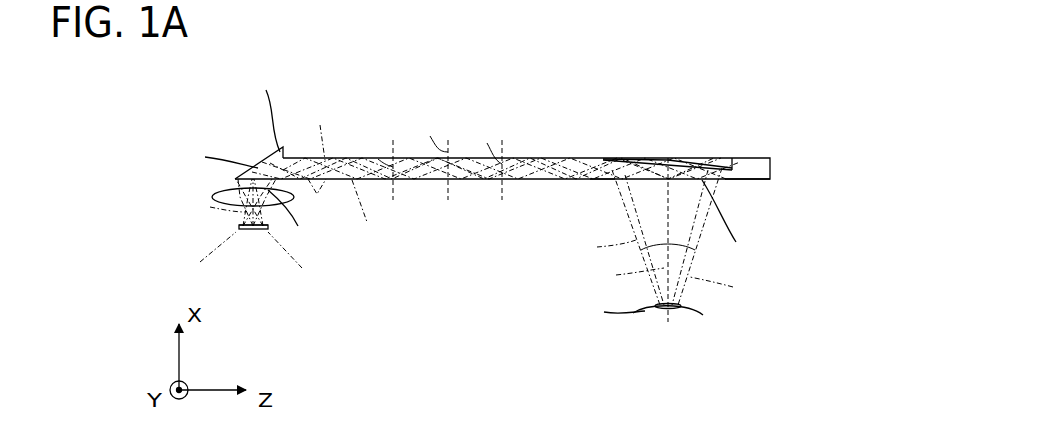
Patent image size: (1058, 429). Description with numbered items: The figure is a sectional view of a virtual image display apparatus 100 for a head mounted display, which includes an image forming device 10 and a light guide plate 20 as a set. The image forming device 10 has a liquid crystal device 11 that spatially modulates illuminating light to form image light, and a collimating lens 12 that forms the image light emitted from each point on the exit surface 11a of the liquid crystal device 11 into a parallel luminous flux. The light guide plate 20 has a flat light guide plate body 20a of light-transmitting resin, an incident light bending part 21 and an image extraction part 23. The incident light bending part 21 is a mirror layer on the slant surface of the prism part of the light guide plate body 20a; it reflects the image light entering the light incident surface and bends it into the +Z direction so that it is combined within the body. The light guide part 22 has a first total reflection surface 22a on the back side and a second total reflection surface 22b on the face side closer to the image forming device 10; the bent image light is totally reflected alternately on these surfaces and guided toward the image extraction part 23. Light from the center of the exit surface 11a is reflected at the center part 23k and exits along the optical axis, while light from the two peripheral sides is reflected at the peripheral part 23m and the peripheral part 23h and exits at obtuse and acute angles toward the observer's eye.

The virtual image display apparatus 100 is at (808, 74).
The image forming device 10 is at (268, 250).
The liquid crystal device 11 is at (252, 231).
The exit surface 11a is at (240, 225).
The collimating lens 12 is at (228, 195).
The light guide plate 20 is at (572, 106).
The incident light bending part 21 is at (263, 161).
The light guide part 22 is at (525, 157).
The first total reflection surface 22a is at (400, 158).
The second total reflection surface 22b is at (423, 181).
The light guide plate body 20a is at (460, 158).
The image extraction part 23 is at (723, 167).
The center part 23k is at (675, 159).
The peripheral part 23m is at (602, 180).
The peripheral part 23h is at (737, 180).